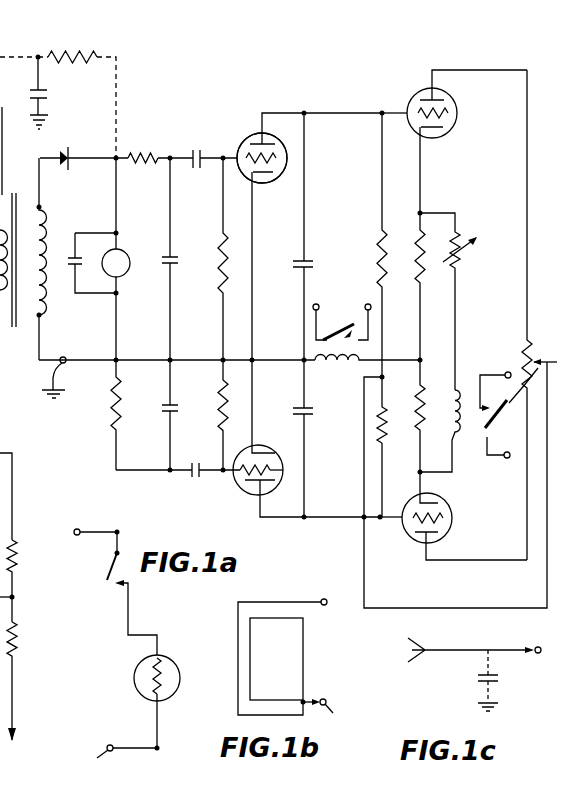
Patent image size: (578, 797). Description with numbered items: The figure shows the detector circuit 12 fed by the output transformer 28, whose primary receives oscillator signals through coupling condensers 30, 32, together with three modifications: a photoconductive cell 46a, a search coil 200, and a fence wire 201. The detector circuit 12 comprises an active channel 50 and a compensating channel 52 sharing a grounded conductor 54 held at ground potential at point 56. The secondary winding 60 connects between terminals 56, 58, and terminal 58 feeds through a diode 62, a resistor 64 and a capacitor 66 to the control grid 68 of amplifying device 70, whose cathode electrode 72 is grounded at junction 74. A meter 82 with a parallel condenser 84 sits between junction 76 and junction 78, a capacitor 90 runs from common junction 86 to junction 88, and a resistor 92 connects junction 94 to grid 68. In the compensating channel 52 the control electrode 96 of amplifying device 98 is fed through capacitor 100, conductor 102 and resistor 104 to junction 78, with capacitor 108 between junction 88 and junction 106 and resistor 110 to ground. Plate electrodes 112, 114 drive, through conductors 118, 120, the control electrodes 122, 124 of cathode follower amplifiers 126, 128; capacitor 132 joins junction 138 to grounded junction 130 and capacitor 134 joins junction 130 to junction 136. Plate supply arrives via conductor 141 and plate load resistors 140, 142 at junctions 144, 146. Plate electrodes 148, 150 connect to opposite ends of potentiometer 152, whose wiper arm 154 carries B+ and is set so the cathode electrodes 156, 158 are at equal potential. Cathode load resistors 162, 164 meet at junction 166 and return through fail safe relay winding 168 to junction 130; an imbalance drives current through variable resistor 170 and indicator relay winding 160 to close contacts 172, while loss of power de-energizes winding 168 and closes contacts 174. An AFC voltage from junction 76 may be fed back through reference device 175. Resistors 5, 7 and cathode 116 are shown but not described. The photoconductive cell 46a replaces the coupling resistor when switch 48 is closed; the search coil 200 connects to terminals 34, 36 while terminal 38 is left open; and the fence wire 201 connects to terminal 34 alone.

In FIG. 1A, the detector circuit 12 is at (298, 56).
In FIG. 1A, the reference device 175 is at (59, 88).
In FIG. 1A, the coupling condenser 30 is at (0, 88).
In FIG. 1A, the diode 62 is at (62, 150).
In FIG. 1A, the junction 76 is at (113, 160).
In FIG. 1A, the resistor 64 is at (145, 156).
In FIG. 1A, the capacitor 66 is at (195, 150).
In FIG. 1A, the control grid 68 is at (244, 148).
In FIG. 1A, the plate electrode 114 is at (263, 146).
In FIG. 1A, the amplifying device 70 is at (286, 172).
In FIG. 1A, the cathode electrode 72 is at (256, 186).
In FIG. 1A, the junction 138 is at (305, 112).
In FIG. 1A, the conductor 118 is at (360, 112).
In FIG. 1A, the junction 144 is at (380, 115).
In FIG. 1A, the capacitor 132 is at (309, 262).
In FIG. 1A, the capacitor 134 is at (311, 412).
In FIG. 1A, the junction 130 is at (302, 362).
In FIG. 1A, the junction 136 is at (302, 522).
In FIG. 1A, the conductor 120 is at (333, 520).
In FIG. 1A, the junction 146 is at (382, 520).
In FIG. 1A, the relay contacts 174 is at (347, 323).
In FIG. 1A, the fail safe relay winding 168 is at (342, 362).
In FIG. 1A, the plate load resistor 140 is at (378, 243).
In FIG. 1A, the plate load resistor 142 is at (386, 440).
In FIG. 1A, the conductor 141 is at (415, 608).
In FIG. 1A, the control electrode 122 is at (410, 106).
In FIG. 1A, the plate electrode 148 is at (440, 101).
In FIG. 1A, the cathode follower amplifier 126 is at (459, 116).
In FIG. 1A, the cathode electrode 156 is at (428, 133).
In FIG. 1A, the cathode load resistor 162 is at (423, 266).
In FIG. 1A, the variable resistor 170 is at (462, 236).
In FIG. 1A, the junction 166 is at (422, 358).
In FIG. 1A, the cathode load resistor 164 is at (423, 402).
In FIG. 1A, the indicator relay winding 160 is at (458, 390).
In FIG. 1A, the potentiometer 152 is at (525, 345).
In FIG. 1A, the wiper arm 154 is at (509, 398).
In FIG. 1A, the relay contacts 172 is at (506, 446).
In FIG. 1A, the control electrode 124 is at (414, 514).
In FIG. 1A, the cathode electrode 158 is at (434, 503).
In FIG. 1A, the cathode follower amplifier 128 is at (453, 518).
In FIG. 1A, the plate electrode 150 is at (432, 537).
In FIG. 1A, the output transformer 28 is at (17, 192).
In FIG. 1A, the input terminal 58 is at (43, 207).
In FIG. 1A, the secondary winding 60 is at (43, 300).
In FIG. 1A, the condenser 84 is at (70, 258).
In FIG. 1A, the meter 82 is at (129, 259).
In FIG. 1A, the active channel 50 is at (150, 200).
In FIG. 1A, the common junction 86 is at (172, 162).
In FIG. 1A, the resistor 92 is at (219, 247).
In FIG. 1A, the capacitor 90 is at (179, 263).
In FIG. 1A, the junction 78 is at (113, 357).
In FIG. 1A, the conductor 54 is at (144, 358).
In FIG. 1A, the junction 94 is at (220, 358).
In FIG. 1A, the junction 74 is at (255, 358).
In FIG. 1A, the point 56 is at (66, 363).
In FIG. 1A, the compensating channel 52 is at (150, 386).
In FIG. 1A, the junction 88 is at (172, 363).
In FIG. 1A, the resistor 104 is at (111, 396).
In FIG. 1A, the resistor 110 is at (219, 406).
In FIG. 1A, the capacitor 108 is at (175, 411).
In FIG. 1A, the junction 106 is at (167, 469).
In FIG. 1A, the conductor 102 is at (142, 473).
In FIG. 1A, the capacitor 100 is at (199, 476).
In FIG. 1A, the amplifying device 98 is at (265, 446).
In FIG. 1A, the plate electrode 112 is at (276, 454).
In FIG. 1A, the control electrode 96 is at (283, 472).
In FIG. 1A, the cathode 116 is at (262, 488).
In FIG. 1A, the coupling condenser 32 is at (8, 483).
In FIG. 1A, the resistor 5 is at (23, 552).
In FIG. 1A, the resistor 7 is at (23, 638).
In FIG. 1A, the terminal 34 is at (80, 535).
In FIG. 1B, the terminal 34 is at (321, 600).
In FIG. 1C, the terminal 34 is at (537, 654).
In FIG. 1A, the switch 48 is at (109, 572).
In FIG. 1A, the photoconductive cell 46a is at (133, 681).
In FIG. 1A, the terminal 38 is at (115, 732).
In FIG. 1B, the search coil 200 is at (305, 675).
In FIG. 1B, the terminal 36 is at (328, 711).
In FIG. 1C, the fence wire 201 is at (446, 652).